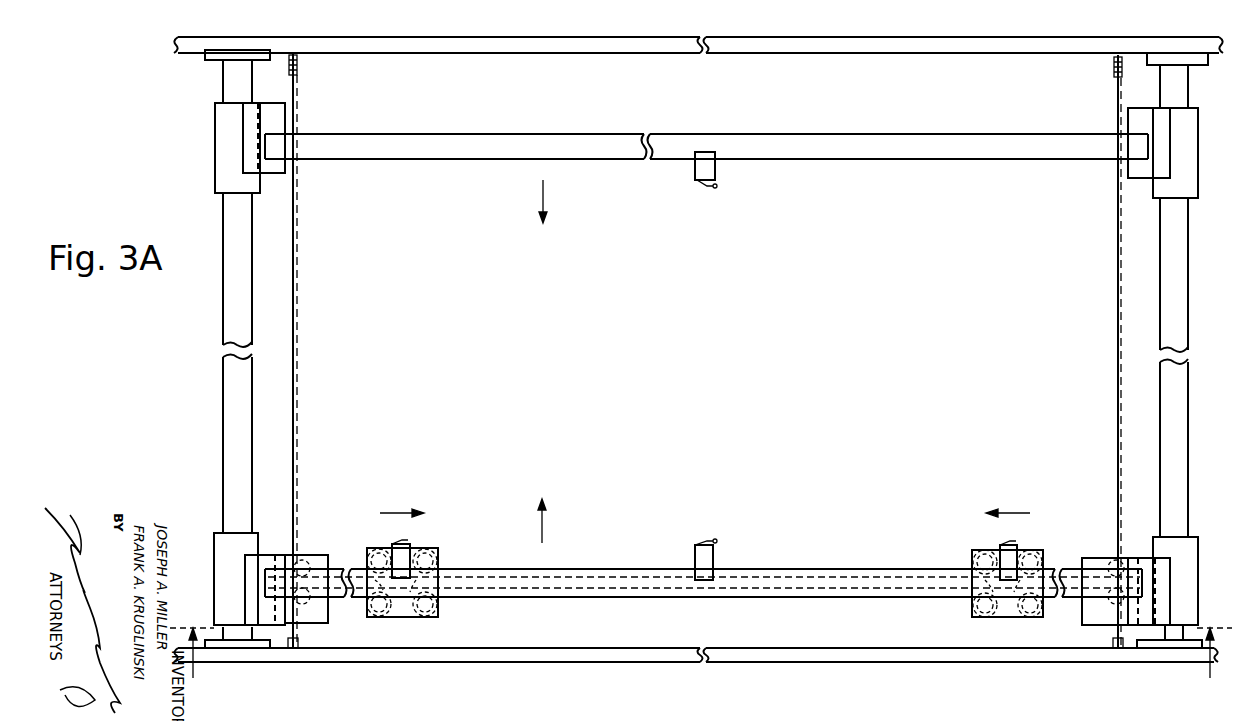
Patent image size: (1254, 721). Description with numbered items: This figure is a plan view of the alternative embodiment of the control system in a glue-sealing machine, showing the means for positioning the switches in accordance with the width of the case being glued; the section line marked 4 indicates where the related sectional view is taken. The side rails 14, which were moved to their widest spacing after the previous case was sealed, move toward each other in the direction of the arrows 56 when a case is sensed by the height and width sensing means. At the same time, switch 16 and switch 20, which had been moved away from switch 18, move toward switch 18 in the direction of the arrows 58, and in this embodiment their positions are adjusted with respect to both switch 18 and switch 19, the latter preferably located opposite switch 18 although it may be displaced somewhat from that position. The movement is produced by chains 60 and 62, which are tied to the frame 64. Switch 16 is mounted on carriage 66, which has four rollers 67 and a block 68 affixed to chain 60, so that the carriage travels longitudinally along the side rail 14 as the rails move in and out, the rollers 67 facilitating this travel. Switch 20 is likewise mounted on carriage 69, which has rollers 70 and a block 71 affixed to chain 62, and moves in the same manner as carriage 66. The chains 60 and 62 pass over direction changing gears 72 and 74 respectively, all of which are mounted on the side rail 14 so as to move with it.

The section line 4- 4 is at (701, 665).
The side rails 14 is at (615, 569).
The switch 16 is at (398, 543).
The switch 18 is at (713, 558).
The switch 19 is at (705, 158).
The switch 20 is at (1003, 543).
The arrows 56 is at (543, 192).
The arrows 58 is at (395, 513).
The chain 60 is at (1118, 391).
The chain 62 is at (293, 395).
The frame 64 is at (582, 53).
The carriage 66 is at (438, 552).
The rollers 67 is at (372, 550).
The block 68 is at (401, 618).
The carriage 69 is at (992, 555).
The rollers 70 is at (973, 560).
The block 71 is at (1005, 612).
The direction changing gears 72 is at (305, 598).
The direction changing gears 74 is at (303, 560).